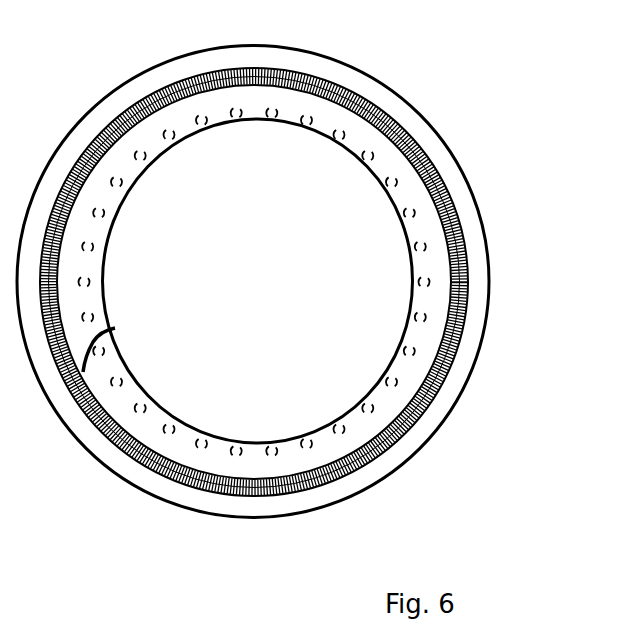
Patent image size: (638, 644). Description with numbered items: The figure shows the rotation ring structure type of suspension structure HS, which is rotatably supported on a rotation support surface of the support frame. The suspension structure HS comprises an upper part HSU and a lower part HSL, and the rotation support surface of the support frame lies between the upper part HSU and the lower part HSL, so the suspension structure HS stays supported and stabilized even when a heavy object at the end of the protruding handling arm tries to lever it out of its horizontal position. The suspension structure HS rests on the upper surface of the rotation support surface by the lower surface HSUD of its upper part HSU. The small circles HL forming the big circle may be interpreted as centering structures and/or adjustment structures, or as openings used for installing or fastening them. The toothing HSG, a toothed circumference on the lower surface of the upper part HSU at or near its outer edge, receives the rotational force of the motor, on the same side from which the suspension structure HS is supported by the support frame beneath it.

The suspension structure HS is at (469, 82).
The toothing HSG is at (266, 82).
The lower part HSL is at (372, 258).
The upper part HSU is at (442, 282).
The lower surface of upper part HSUD is at (133, 340).
The small circles HL is at (134, 409).